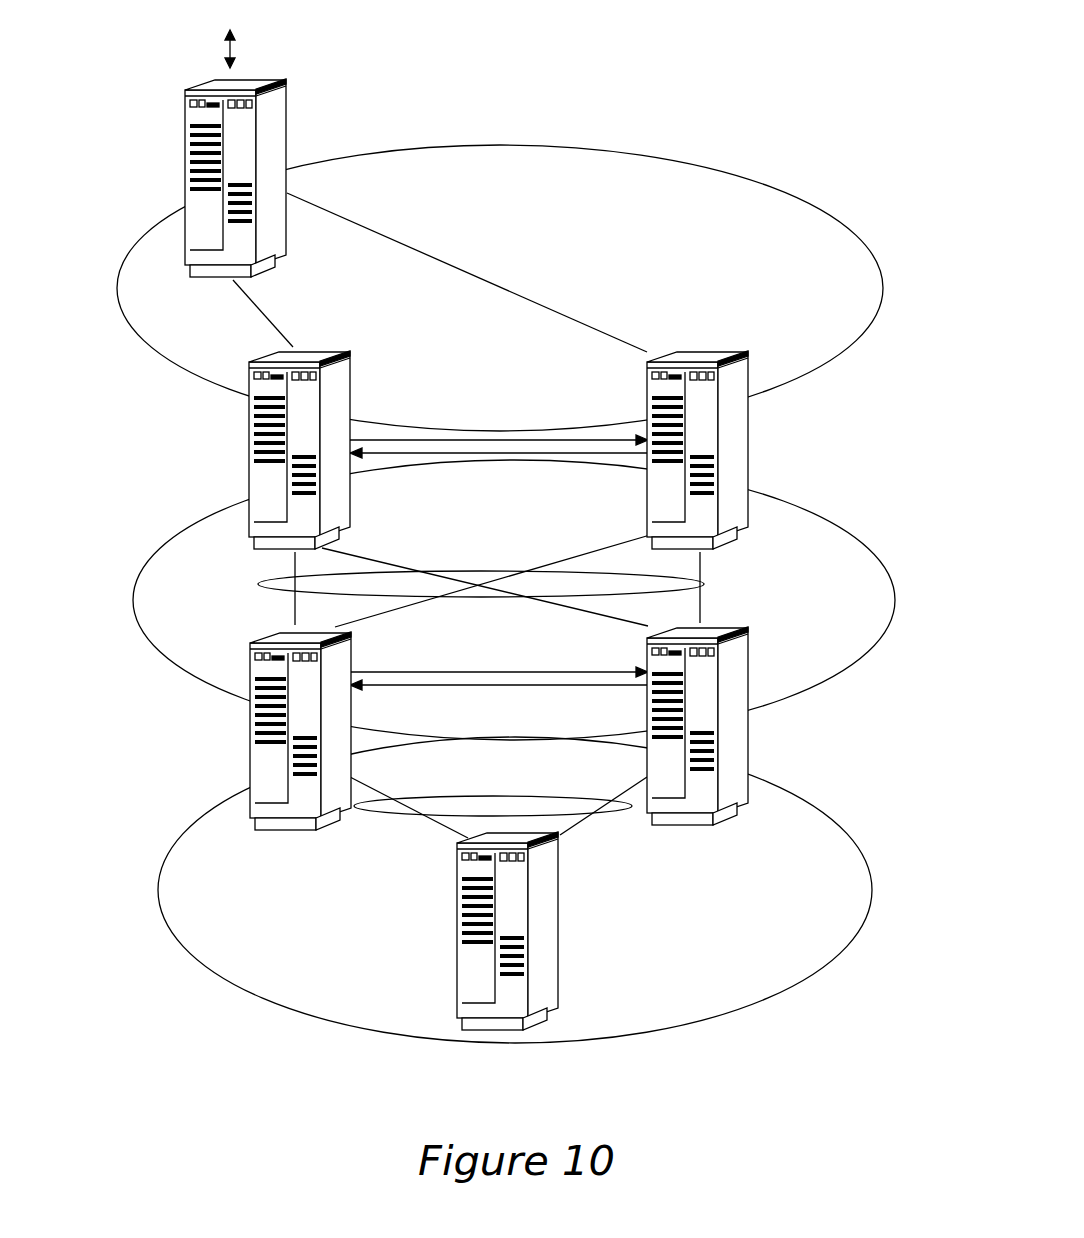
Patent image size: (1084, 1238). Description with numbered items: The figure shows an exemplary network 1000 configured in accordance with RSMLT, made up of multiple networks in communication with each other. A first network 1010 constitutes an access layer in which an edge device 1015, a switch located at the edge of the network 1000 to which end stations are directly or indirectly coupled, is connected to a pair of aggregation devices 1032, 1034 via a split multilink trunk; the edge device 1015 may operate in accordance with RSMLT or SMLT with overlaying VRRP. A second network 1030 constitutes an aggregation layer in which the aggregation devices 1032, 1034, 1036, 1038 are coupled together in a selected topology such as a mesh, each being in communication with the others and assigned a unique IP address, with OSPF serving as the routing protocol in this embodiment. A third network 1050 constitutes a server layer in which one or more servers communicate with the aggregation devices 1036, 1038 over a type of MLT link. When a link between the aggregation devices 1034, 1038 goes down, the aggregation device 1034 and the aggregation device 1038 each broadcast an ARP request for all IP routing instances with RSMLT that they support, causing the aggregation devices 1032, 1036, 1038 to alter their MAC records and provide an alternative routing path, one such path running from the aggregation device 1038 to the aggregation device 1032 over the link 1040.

The network 1000 is at (515, 524).
The first network 1010 is at (798, 320).
The edge device 1015 is at (185, 148).
The second network 1030 is at (855, 618).
The aggregation device 1032 is at (249, 422).
The aggregation device 1034 is at (750, 423).
The aggregation device 1036 is at (253, 750).
The aggregation device 1038 is at (752, 720).
The link 1040 is at (365, 560).
The third network 1050 is at (832, 892).